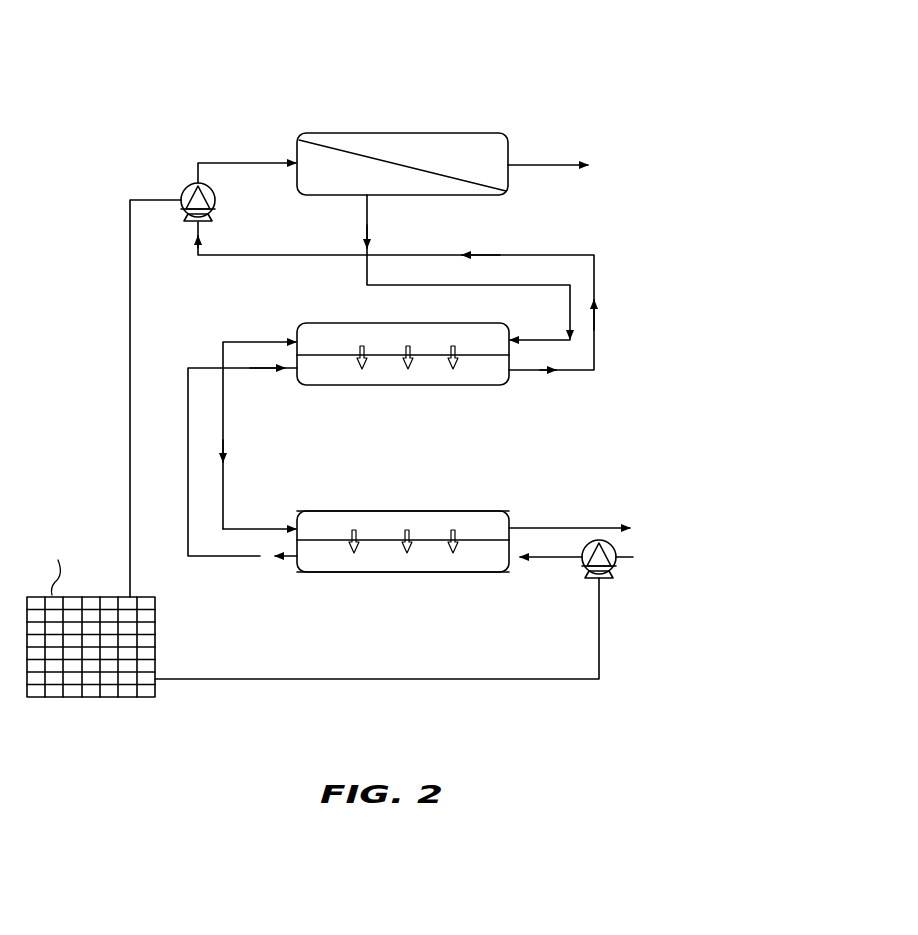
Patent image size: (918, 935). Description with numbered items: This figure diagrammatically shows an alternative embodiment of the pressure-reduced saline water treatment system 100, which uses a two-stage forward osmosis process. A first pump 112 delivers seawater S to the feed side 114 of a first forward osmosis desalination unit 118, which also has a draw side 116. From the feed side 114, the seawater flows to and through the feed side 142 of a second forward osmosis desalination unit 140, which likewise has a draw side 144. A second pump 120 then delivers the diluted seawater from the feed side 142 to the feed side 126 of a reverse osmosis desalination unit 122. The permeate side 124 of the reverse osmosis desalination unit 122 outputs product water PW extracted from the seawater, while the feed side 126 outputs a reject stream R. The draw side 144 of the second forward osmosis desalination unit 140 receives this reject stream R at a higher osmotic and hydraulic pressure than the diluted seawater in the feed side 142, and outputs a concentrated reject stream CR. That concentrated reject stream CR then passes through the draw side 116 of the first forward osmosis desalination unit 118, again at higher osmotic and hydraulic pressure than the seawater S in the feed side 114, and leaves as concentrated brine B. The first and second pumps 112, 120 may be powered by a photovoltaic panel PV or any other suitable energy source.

The pressure-reduced saline water treatment system 100 is at (117, 62).
The first pump 112 is at (607, 578).
The feed side 114 is at (473, 562).
The draw side 116 is at (434, 521).
The first forward osmosis desalination unit 118 is at (500, 508).
The second pump 120 is at (183, 188).
The reverse osmosis desalination unit 122 is at (348, 132).
The permeate side 124 is at (444, 149).
The feed side 126 is at (333, 165).
The second forward osmosis desalination unit 140 is at (512, 386).
The feed side 142 is at (325, 372).
The draw side 144 is at (327, 340).